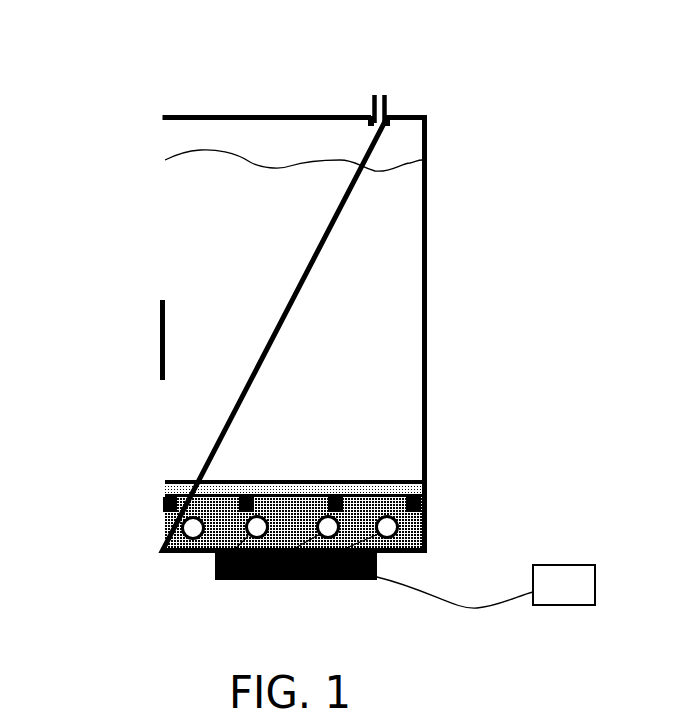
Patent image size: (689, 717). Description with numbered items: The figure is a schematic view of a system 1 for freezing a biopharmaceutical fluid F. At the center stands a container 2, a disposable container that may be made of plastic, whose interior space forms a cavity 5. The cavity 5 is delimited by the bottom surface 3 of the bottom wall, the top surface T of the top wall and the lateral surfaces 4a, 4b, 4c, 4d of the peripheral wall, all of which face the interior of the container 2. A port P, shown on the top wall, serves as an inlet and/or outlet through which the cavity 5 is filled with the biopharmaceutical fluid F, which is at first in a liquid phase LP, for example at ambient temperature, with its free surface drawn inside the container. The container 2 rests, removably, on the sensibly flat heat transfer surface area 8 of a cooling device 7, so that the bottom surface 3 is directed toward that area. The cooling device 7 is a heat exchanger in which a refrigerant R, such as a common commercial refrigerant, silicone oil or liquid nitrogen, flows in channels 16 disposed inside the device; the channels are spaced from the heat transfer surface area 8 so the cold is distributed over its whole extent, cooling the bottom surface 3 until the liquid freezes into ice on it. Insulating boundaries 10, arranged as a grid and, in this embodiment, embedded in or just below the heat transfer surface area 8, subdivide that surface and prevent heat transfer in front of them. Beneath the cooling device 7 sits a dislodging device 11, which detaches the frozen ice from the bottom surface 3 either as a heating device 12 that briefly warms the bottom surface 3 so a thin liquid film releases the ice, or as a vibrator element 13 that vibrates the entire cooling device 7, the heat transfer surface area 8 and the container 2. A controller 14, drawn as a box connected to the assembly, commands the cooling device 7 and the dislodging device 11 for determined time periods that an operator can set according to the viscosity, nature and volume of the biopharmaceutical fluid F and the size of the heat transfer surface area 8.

The system for freezing biopharmaceutical fluid 1 is at (560, 172).
The container 2 is at (426, 262).
The bottom surface 3 is at (317, 483).
The lateral surface 4a is at (103, 340).
The lateral surface 4b is at (161, 325).
The lateral surface 4c is at (487, 310).
The lateral surface 4d is at (432, 309).
The cavity 5 is at (180, 143).
The cooling device 7 is at (410, 533).
The heat transfer surface area 8 is at (278, 484).
The insulating boundaries 10 is at (245, 499).
The refrigerant R is at (249, 520).
The dislodging device 11 is at (309, 603).
The vibrator element 13 is at (309, 603).
The heating device 12 is at (322, 580).
The controller 14 is at (597, 585).
The channels 16 is at (256, 581).
The port P is at (380, 93).
The top surface T is at (406, 116).
The liquid phase LP is at (474, 346).
The biopharmaceutical fluid F is at (410, 356).